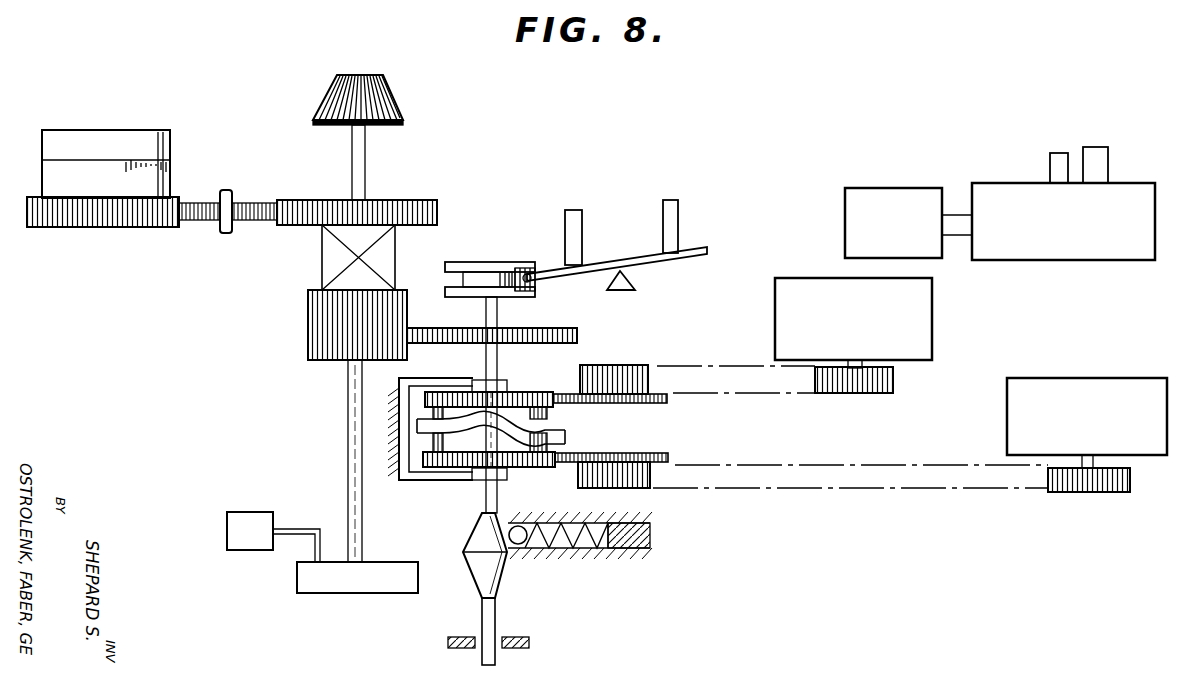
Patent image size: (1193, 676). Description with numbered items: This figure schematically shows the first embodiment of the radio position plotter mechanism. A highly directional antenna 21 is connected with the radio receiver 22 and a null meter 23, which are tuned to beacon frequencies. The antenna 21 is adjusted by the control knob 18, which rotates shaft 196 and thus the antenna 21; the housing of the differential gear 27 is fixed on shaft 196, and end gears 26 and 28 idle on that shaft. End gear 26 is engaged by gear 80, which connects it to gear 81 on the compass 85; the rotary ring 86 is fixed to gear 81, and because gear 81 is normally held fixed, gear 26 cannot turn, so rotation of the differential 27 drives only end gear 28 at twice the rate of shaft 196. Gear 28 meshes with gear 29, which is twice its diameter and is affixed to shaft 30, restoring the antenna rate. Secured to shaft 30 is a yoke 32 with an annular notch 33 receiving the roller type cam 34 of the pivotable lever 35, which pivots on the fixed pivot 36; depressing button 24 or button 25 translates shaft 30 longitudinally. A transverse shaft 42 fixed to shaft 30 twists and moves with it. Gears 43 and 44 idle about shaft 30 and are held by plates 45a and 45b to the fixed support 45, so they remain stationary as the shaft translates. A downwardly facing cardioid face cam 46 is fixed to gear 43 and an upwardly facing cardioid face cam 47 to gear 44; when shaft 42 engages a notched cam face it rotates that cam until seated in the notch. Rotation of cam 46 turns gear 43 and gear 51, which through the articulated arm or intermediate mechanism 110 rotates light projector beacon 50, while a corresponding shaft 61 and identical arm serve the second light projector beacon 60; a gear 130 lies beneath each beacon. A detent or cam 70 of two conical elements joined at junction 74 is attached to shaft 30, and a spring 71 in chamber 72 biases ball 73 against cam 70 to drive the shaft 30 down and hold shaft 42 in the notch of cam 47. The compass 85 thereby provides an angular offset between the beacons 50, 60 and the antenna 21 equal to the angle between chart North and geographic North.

The control knob 18 is at (400, 108).
The directional antenna 21 is at (360, 594).
The radio receiver 22 is at (268, 506).
The null meter 23 is at (908, 180).
The button 24 is at (678, 212).
The button 25 is at (565, 220).
The end gear 26 is at (437, 212).
The differential gear 27 is at (322, 258).
The end gear 28 is at (308, 335).
The gear 29 is at (577, 336).
The shaft 30 is at (486, 308).
The yoke 32 is at (486, 254).
The annular notch 33 is at (445, 276).
The roller type cam 34 is at (531, 268).
The pivotable lever 35 is at (605, 280).
The pivot 36 is at (636, 284).
The transverse shaft 42 is at (567, 429).
The gear 43 is at (550, 380).
The gear 44 is at (520, 468).
The fixed support 45 is at (399, 438).
The plate 45a is at (468, 382).
The plate 45b is at (403, 481).
The cardioid face cam 46 is at (560, 411).
The cardioid face cam 47 is at (548, 444).
The light projector beacon 50 is at (932, 329).
The gear 51 is at (636, 404).
The light projector beacon 60 is at (1046, 494).
The shaft and gear 61 is at (640, 453).
The detent or cam 70 is at (471, 579).
The spring 71 is at (598, 523).
The chamber 72 is at (592, 550).
The ball 73 is at (522, 548).
The junction 74 is at (470, 542).
The gear 80 is at (212, 197).
The gear 81 is at (150, 228).
The compass 85 is at (160, 108).
The rotary ring 86 is at (42, 146).
The articulated arm 110 is at (708, 360).
The gear 130 is at (893, 382).
The shaft 196 is at (348, 458).